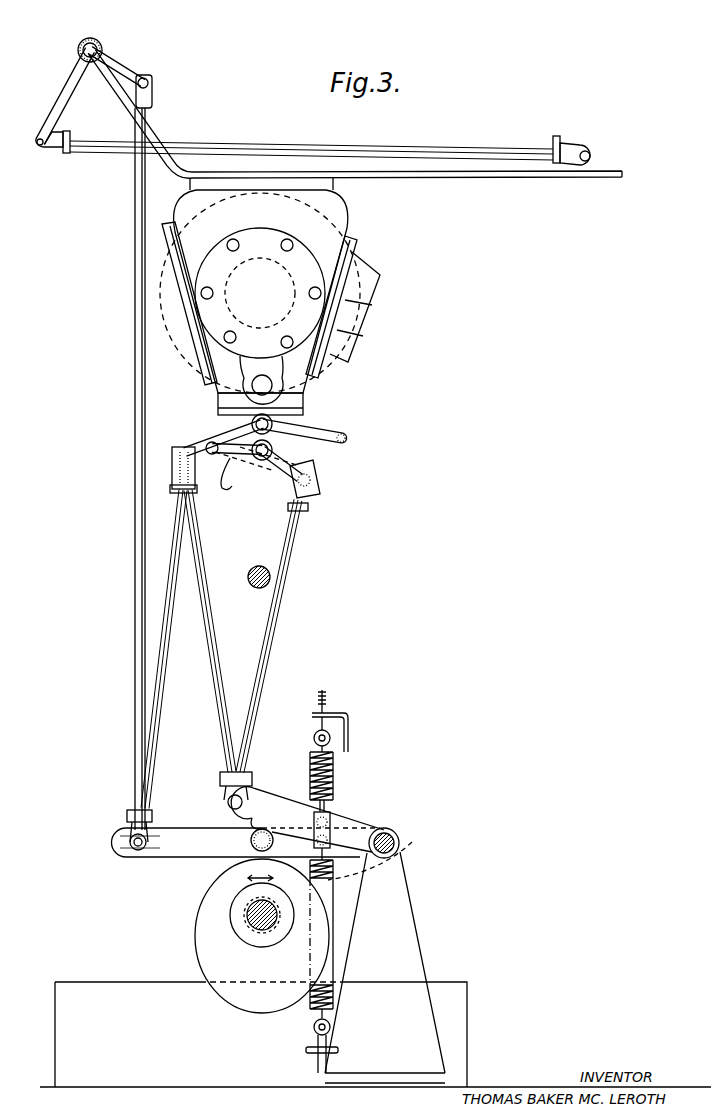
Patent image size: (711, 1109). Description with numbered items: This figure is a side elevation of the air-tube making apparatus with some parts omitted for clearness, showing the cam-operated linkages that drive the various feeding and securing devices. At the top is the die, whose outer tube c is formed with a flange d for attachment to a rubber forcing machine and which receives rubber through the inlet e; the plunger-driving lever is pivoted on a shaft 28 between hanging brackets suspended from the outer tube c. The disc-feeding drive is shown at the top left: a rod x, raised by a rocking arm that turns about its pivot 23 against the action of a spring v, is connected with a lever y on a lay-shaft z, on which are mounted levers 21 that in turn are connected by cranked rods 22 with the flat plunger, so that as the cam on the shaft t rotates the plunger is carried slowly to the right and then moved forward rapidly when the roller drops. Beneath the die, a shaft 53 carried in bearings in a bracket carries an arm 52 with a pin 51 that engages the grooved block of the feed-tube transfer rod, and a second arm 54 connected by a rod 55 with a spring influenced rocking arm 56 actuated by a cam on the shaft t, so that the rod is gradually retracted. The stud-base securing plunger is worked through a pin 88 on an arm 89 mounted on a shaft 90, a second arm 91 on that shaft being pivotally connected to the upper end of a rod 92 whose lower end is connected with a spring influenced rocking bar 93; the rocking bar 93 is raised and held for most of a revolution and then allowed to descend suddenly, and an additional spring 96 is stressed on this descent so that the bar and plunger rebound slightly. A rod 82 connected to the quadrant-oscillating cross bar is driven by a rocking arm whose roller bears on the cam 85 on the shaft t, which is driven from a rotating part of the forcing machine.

The lay-shaft z is at (102, 46).
The lever y is at (128, 70).
The lever 21 is at (72, 80).
The rod 22 is at (426, 147).
The rod x is at (140, 462).
The inlet e is at (300, 258).
The outer tube c is at (165, 272).
The flange d is at (356, 258).
The second arm 54 is at (227, 418).
The shaft 53 is at (272, 418).
The arm 52 is at (290, 432).
The pin 51 is at (350, 439).
The shaft 90 is at (262, 462).
The arm 89 is at (236, 460).
The pin 88 is at (203, 440).
The second arm 91 is at (312, 470).
The rod 92 is at (300, 568).
The shaft 28 is at (268, 585).
The rod 82 is at (212, 628).
The rod 55 is at (162, 708).
The rocking arm 56 is at (170, 840).
The pivot 23 is at (385, 832).
The rocking bar 93 is at (272, 800).
The spring v is at (397, 848).
The additional spring 96 is at (327, 778).
The cam 85 is at (200, 938).
The shaft t is at (245, 905).